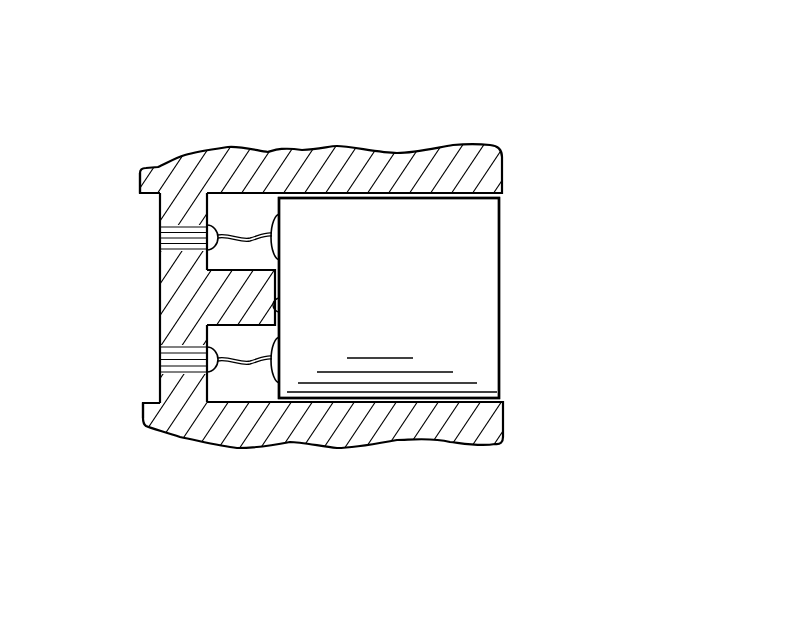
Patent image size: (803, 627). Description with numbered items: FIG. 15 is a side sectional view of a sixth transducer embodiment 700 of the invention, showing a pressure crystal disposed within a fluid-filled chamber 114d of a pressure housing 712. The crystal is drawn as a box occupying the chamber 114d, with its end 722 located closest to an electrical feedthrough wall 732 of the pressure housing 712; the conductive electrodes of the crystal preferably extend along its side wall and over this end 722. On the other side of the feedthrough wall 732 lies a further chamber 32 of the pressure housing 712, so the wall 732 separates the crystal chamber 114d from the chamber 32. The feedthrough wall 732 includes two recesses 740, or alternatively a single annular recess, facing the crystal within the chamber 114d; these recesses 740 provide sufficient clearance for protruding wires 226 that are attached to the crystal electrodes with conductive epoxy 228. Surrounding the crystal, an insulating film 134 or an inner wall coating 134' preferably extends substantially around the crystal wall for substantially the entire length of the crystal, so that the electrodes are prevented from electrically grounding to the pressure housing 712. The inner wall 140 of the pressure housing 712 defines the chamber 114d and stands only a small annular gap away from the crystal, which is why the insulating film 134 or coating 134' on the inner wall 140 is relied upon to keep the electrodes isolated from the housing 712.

The transducer embodiment 700 is at (489, 118).
The pressure housing 712 is at (473, 175).
The electrical feedthrough wall 732 is at (188, 203).
The recess 740 is at (233, 338).
The fluid-filled chamber 114d is at (260, 207).
The end of pressure crystal 722 is at (270, 322).
The protruding wire 226 is at (250, 400).
The conductive epoxy 228 is at (250, 363).
The chamber 32 is at (130, 241).
The insulating film 134 is at (456, 296).
The inner wall coating 134' is at (389, 298).
The inner wall 140 is at (390, 403).